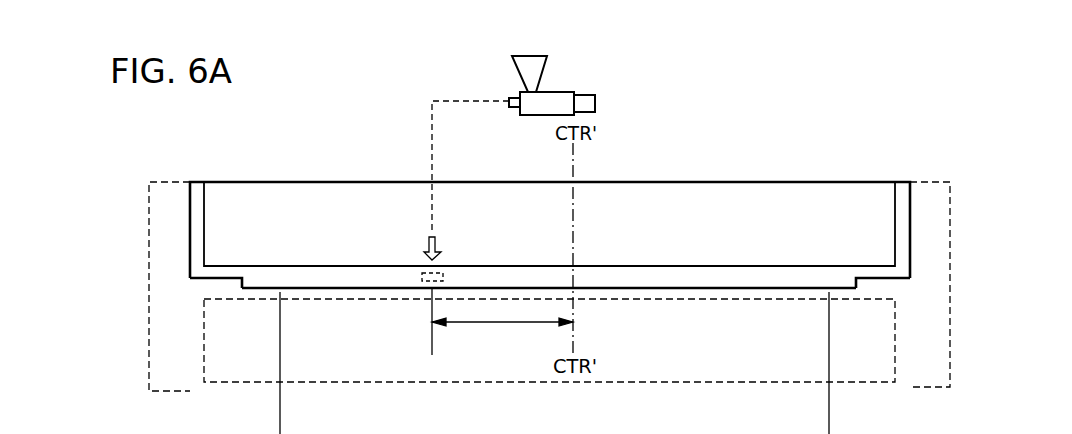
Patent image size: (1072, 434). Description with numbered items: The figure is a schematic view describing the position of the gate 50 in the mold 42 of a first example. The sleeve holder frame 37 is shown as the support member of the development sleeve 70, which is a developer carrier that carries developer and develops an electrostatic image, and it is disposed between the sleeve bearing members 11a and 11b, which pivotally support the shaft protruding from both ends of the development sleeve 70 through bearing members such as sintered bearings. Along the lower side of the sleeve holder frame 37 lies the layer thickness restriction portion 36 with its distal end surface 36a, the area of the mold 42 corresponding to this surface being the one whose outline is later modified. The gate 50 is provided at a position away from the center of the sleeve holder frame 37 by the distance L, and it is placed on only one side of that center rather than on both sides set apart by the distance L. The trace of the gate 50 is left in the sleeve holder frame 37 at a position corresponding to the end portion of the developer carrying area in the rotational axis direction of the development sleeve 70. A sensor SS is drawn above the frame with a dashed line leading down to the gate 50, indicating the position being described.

The mold 42 is at (862, 130).
The sleeve holder frame 37 is at (639, 192).
The layer thickness restriction portion 36 is at (851, 290).
The distal end surface 36a is at (752, 291).
The sleeve bearing member 11a is at (931, 337).
The sleeve bearing member 11b is at (158, 346).
The development sleeve 70 is at (708, 372).
The gate 50 is at (444, 277).
The sensor SS is at (535, 116).
The distance L is at (502, 321).